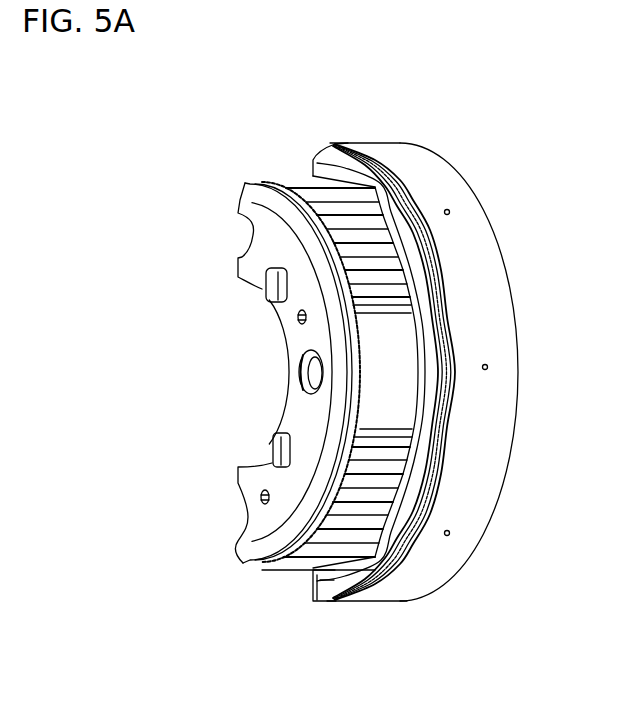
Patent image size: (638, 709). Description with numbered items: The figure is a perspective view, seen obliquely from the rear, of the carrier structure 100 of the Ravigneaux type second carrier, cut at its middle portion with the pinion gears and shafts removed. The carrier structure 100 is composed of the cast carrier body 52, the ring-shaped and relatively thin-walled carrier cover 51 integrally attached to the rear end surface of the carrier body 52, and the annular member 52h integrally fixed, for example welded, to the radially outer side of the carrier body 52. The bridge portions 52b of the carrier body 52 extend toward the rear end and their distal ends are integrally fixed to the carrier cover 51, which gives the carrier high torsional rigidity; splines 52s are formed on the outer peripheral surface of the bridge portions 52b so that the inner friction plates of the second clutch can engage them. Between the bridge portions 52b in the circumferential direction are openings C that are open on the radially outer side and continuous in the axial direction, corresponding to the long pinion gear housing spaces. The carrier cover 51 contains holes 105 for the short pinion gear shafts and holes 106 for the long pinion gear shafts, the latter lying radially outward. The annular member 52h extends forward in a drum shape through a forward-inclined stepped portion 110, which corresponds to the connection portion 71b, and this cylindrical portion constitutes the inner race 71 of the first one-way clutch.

The carrier structure 100 is at (243, 120).
The carrier cover 51 is at (249, 365).
The carrier body 52 is at (383, 351).
The bridge portions 52b is at (300, 170).
The annular member 52h is at (357, 139).
The splines 52s is at (395, 260).
The inner race 71 is at (463, 187).
The connection portion 71b is at (343, 585).
The holes for the short pinion gear shafts 105 is at (273, 300).
The holes for the long pinion gear shafts 106 is at (300, 377).
The stepped portion 110 is at (383, 634).
The openings C is at (405, 391).